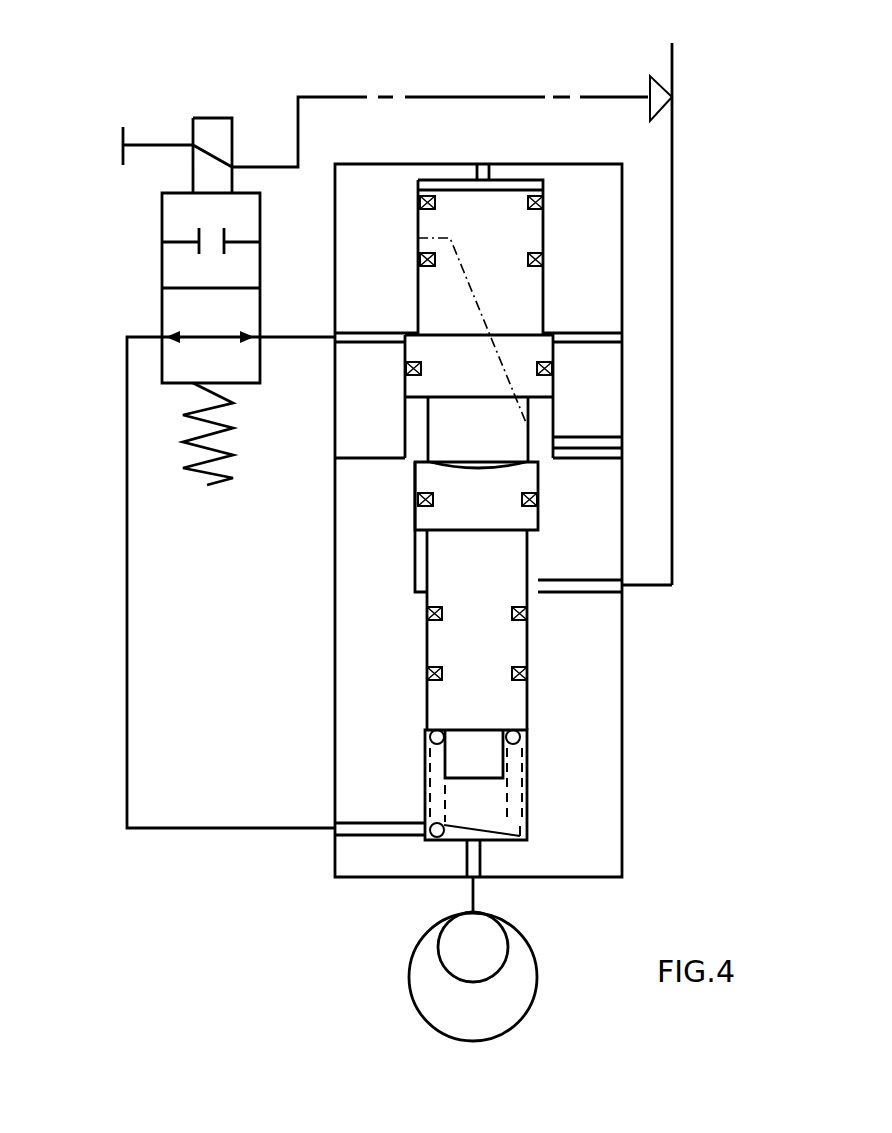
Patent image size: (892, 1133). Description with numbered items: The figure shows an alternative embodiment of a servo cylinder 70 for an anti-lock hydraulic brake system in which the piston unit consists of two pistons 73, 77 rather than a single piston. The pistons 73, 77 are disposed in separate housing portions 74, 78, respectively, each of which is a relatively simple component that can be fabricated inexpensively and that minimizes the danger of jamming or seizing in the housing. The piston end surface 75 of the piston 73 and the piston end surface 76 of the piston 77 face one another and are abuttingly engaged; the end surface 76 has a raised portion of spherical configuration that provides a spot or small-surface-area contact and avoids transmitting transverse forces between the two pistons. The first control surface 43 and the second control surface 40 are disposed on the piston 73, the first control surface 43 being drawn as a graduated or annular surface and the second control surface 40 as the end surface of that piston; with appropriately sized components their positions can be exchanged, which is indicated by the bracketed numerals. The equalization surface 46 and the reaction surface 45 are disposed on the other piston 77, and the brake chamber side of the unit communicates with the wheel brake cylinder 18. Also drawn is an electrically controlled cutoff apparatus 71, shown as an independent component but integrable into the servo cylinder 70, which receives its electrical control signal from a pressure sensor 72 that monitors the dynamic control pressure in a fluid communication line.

The wheel brake cylinder 18 is at (470, 943).
The second control surface 40 is at (503, 190).
The first control surface 43 is at (503, 335).
The reaction surface 45 is at (472, 730).
The equalization surface 46 is at (470, 535).
The servo cylinder 70 is at (328, 441).
The cutoff apparatus 71 is at (162, 276).
The pressure sensor 72 is at (648, 97).
The piston 73 is at (517, 223).
The housing portion 74 is at (593, 283).
The piston end surface 75 is at (530, 462).
The piston end surface 76 is at (473, 470).
The piston 77 is at (487, 672).
The housing portion 78 is at (578, 762).